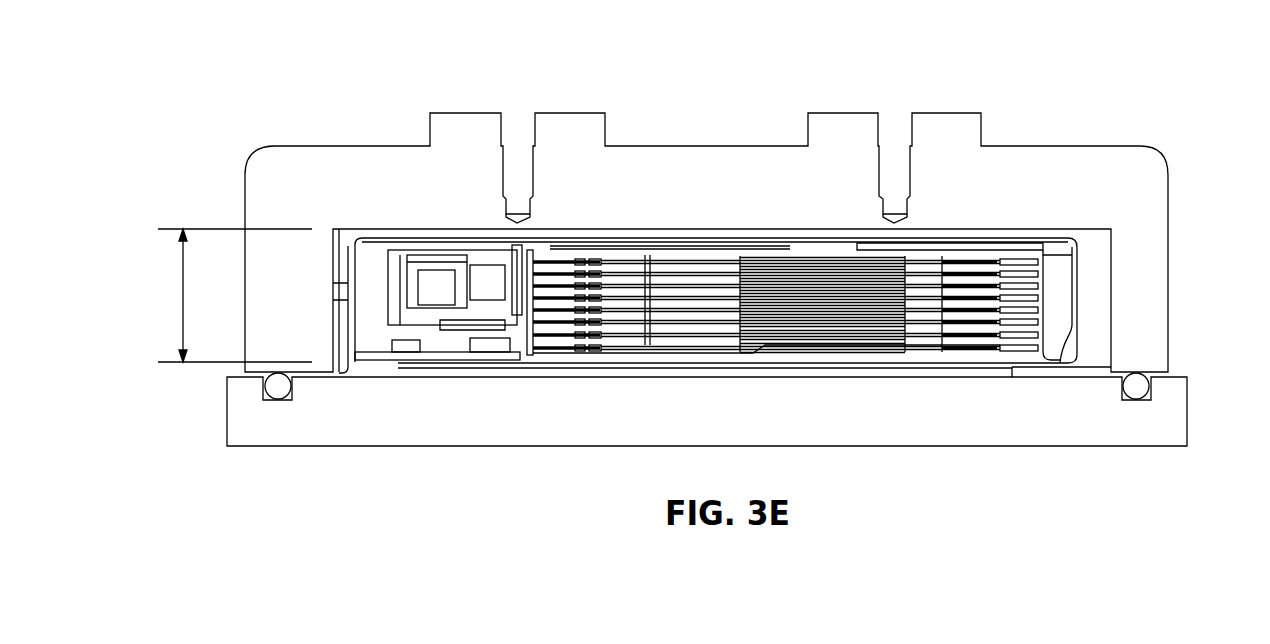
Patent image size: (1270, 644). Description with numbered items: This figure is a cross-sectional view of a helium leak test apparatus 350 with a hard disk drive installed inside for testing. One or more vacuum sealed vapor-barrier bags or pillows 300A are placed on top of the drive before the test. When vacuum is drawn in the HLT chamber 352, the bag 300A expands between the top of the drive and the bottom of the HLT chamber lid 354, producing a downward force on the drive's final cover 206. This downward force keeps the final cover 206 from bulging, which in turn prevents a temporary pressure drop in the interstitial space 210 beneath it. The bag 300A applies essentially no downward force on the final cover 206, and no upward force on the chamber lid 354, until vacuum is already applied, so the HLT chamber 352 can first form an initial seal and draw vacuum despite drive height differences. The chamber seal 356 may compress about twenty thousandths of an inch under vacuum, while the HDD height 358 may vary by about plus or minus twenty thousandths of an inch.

The HLT apparatus 350 is at (1112, 79).
The HLT chamber lid 354 is at (616, 205).
The chamber seal 356 is at (265, 383).
The HDD height 358 is at (183, 256).
The HLT chamber 352 is at (343, 256).
The bag 300A is at (727, 233).
The final cover 206 is at (994, 238).
The interstitial space 210 is at (1063, 237).